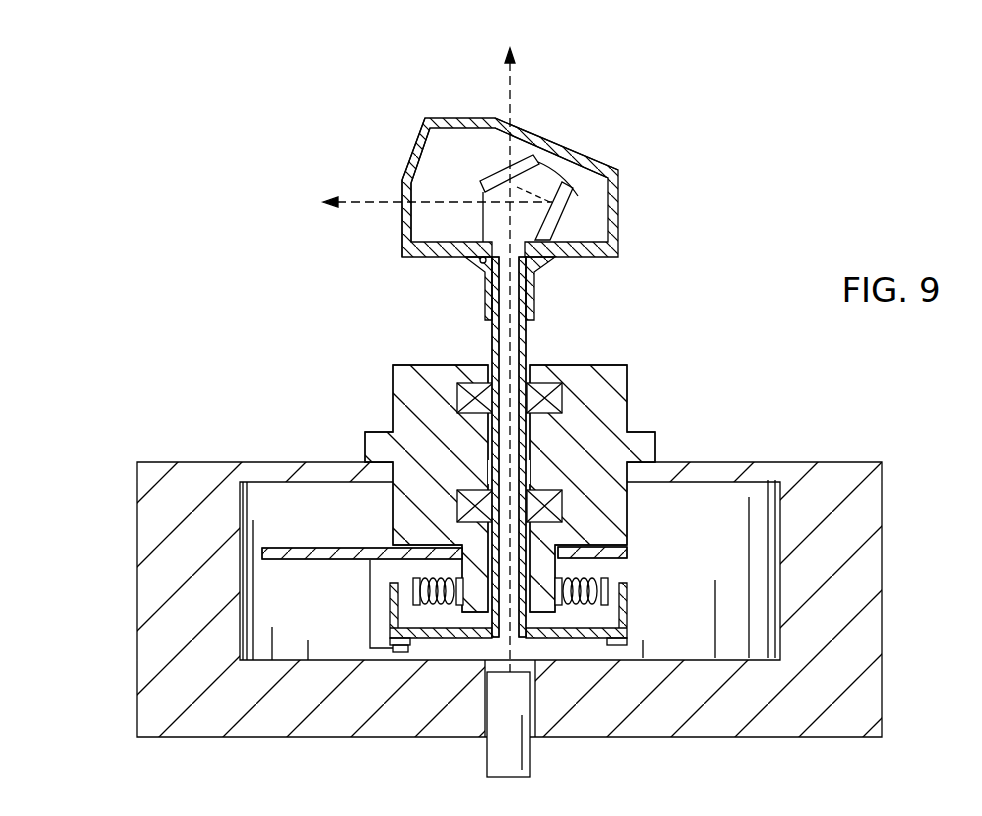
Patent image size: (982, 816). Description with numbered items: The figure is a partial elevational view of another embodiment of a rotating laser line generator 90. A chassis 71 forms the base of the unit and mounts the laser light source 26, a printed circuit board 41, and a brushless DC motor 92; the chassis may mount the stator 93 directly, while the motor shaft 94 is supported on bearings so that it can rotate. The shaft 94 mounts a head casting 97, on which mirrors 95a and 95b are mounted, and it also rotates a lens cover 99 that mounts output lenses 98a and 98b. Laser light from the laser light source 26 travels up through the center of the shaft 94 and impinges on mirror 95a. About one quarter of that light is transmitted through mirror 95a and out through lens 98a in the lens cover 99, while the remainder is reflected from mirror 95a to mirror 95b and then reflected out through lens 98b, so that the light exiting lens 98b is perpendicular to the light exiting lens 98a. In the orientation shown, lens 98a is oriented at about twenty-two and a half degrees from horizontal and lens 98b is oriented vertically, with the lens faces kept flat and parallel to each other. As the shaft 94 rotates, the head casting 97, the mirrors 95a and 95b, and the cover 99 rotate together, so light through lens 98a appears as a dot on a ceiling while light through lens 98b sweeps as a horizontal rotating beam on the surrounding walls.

The rotating laser line generator 90 is at (168, 352).
The chassis 71 is at (234, 738).
The laser light source 26 is at (485, 757).
The stator 93 is at (447, 365).
The brushless DC motor 92 is at (652, 398).
The printed circuit board 41 is at (322, 546).
The motor shaft 94 is at (527, 345).
The head casting 97 is at (445, 262).
The output lens 98a is at (522, 128).
The output lens 98b is at (397, 196).
The lens cover 99 is at (402, 227).
The mirror 95a is at (503, 168).
The mirror 95b is at (558, 205).